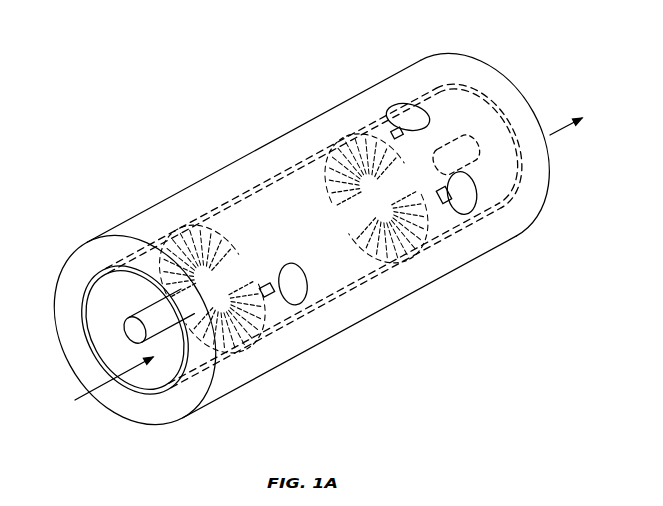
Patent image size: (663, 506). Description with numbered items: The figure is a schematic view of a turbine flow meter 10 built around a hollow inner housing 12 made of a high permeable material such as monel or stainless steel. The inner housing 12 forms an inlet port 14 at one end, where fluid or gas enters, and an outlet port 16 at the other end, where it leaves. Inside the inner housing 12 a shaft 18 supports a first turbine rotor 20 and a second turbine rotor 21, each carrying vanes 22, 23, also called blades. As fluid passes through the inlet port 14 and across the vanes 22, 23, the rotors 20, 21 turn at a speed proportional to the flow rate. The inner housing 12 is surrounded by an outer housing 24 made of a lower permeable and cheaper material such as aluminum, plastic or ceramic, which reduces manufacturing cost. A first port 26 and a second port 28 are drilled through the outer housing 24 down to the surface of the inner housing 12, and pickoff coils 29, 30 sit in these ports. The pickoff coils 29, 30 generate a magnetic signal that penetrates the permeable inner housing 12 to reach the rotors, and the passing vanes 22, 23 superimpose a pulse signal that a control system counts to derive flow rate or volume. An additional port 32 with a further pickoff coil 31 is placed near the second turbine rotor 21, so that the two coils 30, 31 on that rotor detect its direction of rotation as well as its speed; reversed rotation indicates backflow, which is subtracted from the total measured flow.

The turbine flow meter 10 is at (218, 122).
The inner housing 12 is at (146, 394).
The inlet port 14 is at (112, 337).
The outlet port 16 is at (475, 122).
The shaft 18 is at (127, 327).
The first turbine rotor 20 is at (248, 338).
The second turbine rotor 21 is at (408, 248).
The vanes 22 is at (258, 252).
The vanes 23 is at (400, 157).
The outer housing 24 is at (172, 196).
The first port 26 is at (307, 297).
The second port 28 is at (478, 192).
The pickoff coil 29 is at (273, 300).
The pickoff coil 30 is at (442, 190).
The pickoff coil 31 is at (432, 123).
The port 32 is at (393, 103).